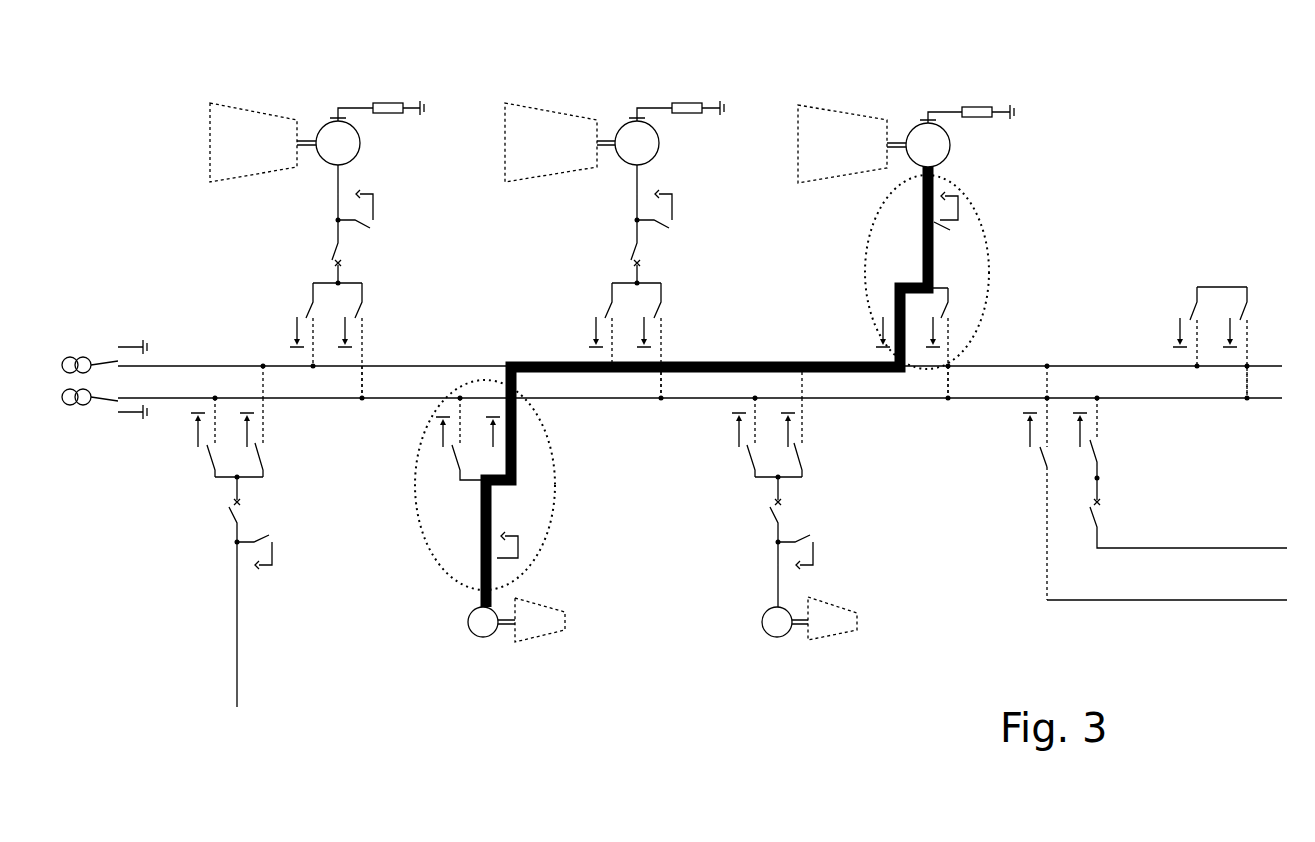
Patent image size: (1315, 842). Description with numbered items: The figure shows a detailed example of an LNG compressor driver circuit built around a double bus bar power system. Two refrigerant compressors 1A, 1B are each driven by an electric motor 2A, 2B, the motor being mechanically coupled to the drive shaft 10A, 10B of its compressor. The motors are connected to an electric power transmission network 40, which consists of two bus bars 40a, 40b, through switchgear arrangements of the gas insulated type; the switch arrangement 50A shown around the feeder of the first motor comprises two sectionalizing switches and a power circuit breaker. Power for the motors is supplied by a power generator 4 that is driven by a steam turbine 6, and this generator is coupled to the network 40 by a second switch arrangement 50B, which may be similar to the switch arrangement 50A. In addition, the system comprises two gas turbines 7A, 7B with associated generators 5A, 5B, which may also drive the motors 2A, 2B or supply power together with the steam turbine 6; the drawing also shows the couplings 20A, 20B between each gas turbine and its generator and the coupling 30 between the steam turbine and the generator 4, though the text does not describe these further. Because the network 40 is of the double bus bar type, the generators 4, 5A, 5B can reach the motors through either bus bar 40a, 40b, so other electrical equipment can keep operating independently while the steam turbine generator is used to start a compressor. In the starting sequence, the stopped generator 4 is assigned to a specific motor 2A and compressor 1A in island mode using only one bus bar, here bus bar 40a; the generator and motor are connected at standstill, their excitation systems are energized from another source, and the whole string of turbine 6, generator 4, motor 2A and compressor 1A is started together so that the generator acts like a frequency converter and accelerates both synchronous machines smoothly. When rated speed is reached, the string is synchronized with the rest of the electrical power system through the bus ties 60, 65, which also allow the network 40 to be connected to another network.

The refrigerant compressor 1A is at (543, 602).
The refrigerant compressor 1B is at (833, 605).
The electric motor 2A is at (480, 638).
The electric motor 2B is at (775, 638).
The power generator 4 is at (912, 120).
The generator 5A is at (327, 120).
The generator 5B is at (627, 120).
The steam turbine 6 is at (850, 112).
The gas turbine 7A is at (260, 112).
The gas turbine 7B is at (555, 112).
The drive shaft 10A is at (507, 637).
The drive shaft 10B is at (800, 630).
The turbine-generator shaft A 20A is at (310, 148).
The turbine-generator shaft B 20B is at (608, 148).
The steam turbine-generator shaft 30 is at (898, 150).
The electric power transmission network 40 is at (710, 399).
The bus bar 40a is at (407, 365).
The bus bar 40b is at (407, 399).
The switch arrangement 50A is at (443, 572).
The second switch arrangement 50B is at (962, 286).
The bus tie 60 is at (1185, 305).
The bus tie 65 is at (1255, 545).